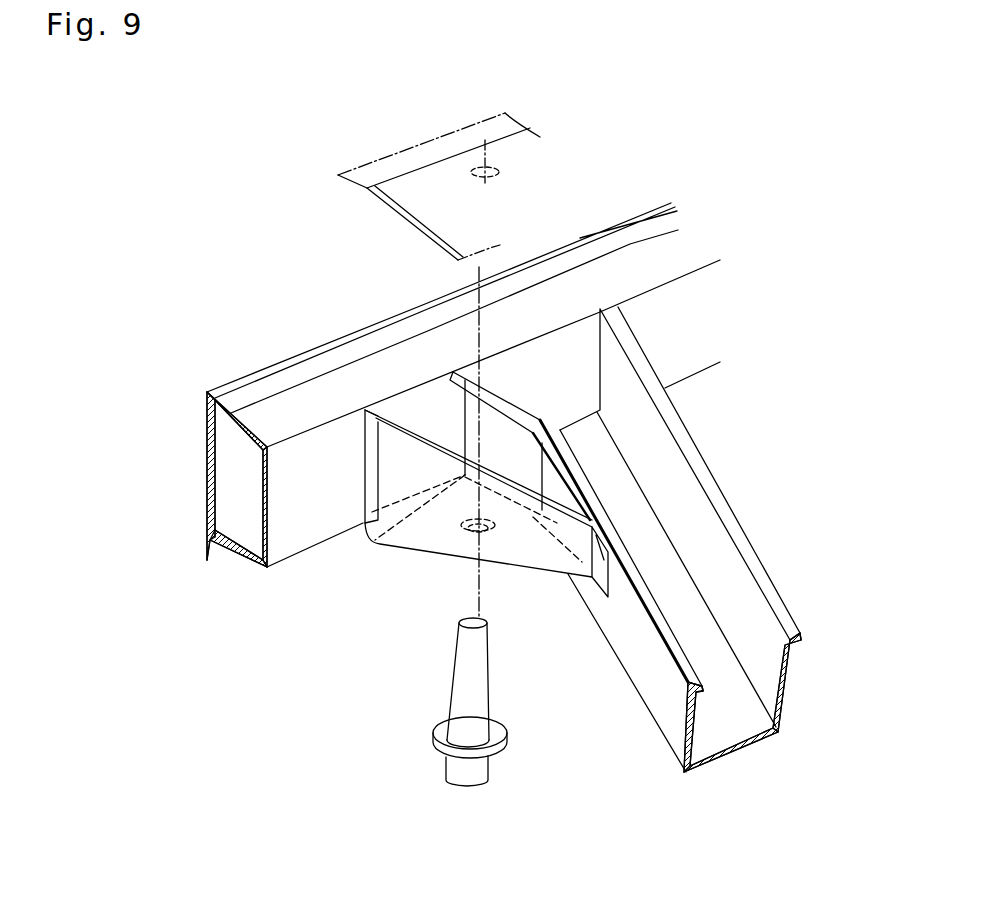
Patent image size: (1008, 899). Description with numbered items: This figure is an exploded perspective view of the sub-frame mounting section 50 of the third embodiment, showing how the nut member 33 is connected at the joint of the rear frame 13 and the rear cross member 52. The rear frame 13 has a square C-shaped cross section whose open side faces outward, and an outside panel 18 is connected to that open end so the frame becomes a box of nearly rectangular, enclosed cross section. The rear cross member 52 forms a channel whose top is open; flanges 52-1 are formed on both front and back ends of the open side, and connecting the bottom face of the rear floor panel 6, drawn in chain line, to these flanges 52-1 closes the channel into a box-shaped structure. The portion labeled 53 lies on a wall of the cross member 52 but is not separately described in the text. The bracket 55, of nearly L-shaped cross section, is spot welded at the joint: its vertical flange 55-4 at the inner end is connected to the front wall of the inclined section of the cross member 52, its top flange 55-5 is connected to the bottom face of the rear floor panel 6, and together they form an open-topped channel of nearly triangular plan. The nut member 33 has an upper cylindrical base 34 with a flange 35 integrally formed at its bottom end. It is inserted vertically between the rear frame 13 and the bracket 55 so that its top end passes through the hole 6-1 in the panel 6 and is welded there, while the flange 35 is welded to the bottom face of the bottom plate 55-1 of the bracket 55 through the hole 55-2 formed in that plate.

The mounting structure assembly 50 is at (236, 307).
The outside panel 18 is at (206, 486).
The rear frame 13 is at (238, 556).
The rear floor panel 6 is at (368, 183).
The hole 6-1 is at (498, 163).
The bracket 55 is at (380, 560).
The bottom plate 55-1 is at (504, 549).
The hole 55-2 is at (480, 533).
The vertical flange 55-4 is at (593, 588).
The flange 55-5 is at (425, 430).
The rear cross member 52 is at (758, 540).
The flanges 52-1 is at (788, 624).
The channel bottom 53 is at (642, 523).
The nut member 33 is at (428, 738).
The upper cylindrical base 34 is at (461, 680).
The flange 35 is at (497, 738).